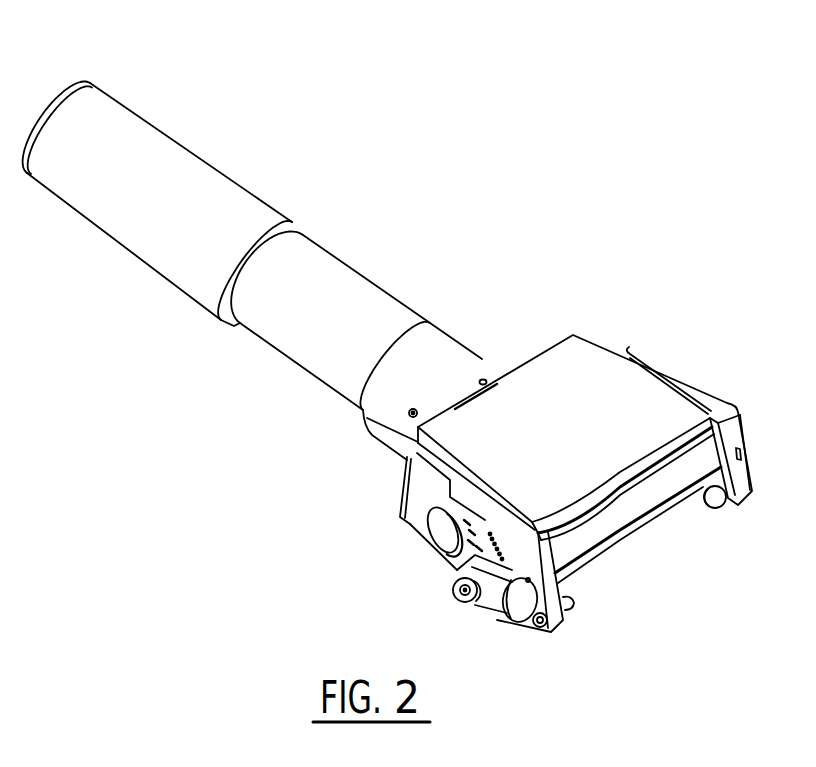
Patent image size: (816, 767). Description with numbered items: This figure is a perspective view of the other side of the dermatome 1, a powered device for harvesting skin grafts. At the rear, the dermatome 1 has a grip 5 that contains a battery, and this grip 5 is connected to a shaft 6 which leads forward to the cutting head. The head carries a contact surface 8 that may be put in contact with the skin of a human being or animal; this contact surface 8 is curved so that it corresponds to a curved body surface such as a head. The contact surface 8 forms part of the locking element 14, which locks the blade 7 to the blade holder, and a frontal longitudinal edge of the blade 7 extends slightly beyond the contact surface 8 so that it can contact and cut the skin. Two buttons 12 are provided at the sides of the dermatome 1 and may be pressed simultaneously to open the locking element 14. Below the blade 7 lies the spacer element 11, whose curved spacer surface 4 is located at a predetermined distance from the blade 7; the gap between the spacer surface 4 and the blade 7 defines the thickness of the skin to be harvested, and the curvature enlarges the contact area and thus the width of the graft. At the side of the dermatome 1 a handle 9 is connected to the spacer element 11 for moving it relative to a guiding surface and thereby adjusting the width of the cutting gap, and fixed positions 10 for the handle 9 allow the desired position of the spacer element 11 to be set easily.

The dermatome 1 is at (387, 374).
The spacer surface 4 is at (637, 495).
The grip 5 is at (167, 147).
The shaft 6 is at (333, 293).
The blade 7 is at (683, 440).
The contact surface 8 is at (610, 373).
The handle 9 is at (505, 598).
The fixed positions 10 is at (475, 527).
The spacer element 11 is at (595, 535).
The buttons 12 is at (443, 532).
The locking element 14 is at (535, 393).